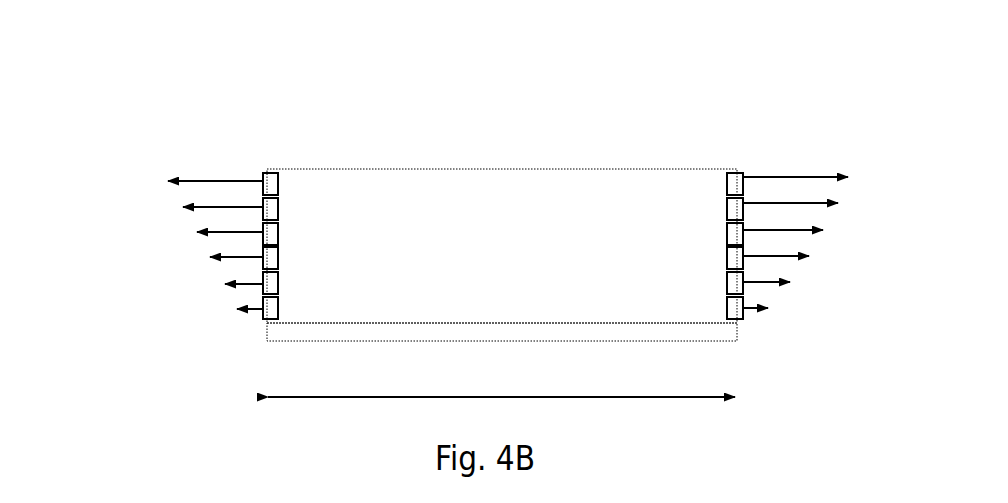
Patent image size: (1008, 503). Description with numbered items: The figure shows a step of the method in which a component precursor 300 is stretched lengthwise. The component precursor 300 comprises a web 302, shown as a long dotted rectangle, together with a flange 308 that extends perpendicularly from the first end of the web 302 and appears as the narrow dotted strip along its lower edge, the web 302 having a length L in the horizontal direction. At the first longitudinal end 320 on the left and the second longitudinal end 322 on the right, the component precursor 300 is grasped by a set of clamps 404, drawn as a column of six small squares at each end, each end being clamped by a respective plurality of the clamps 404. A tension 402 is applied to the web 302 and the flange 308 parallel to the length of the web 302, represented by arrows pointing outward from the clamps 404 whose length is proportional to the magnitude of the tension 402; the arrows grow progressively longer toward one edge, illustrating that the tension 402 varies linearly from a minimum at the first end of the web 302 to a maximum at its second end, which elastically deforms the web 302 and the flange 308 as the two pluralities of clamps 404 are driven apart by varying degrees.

The component precursor 300 is at (222, 135).
The web 302 is at (475, 224).
The flange 308 is at (622, 332).
The first longitudinal end 320 is at (270, 155).
The second longitudinal end 322 is at (738, 155).
The tension 402 is at (197, 209).
The clamps 404 is at (281, 184).